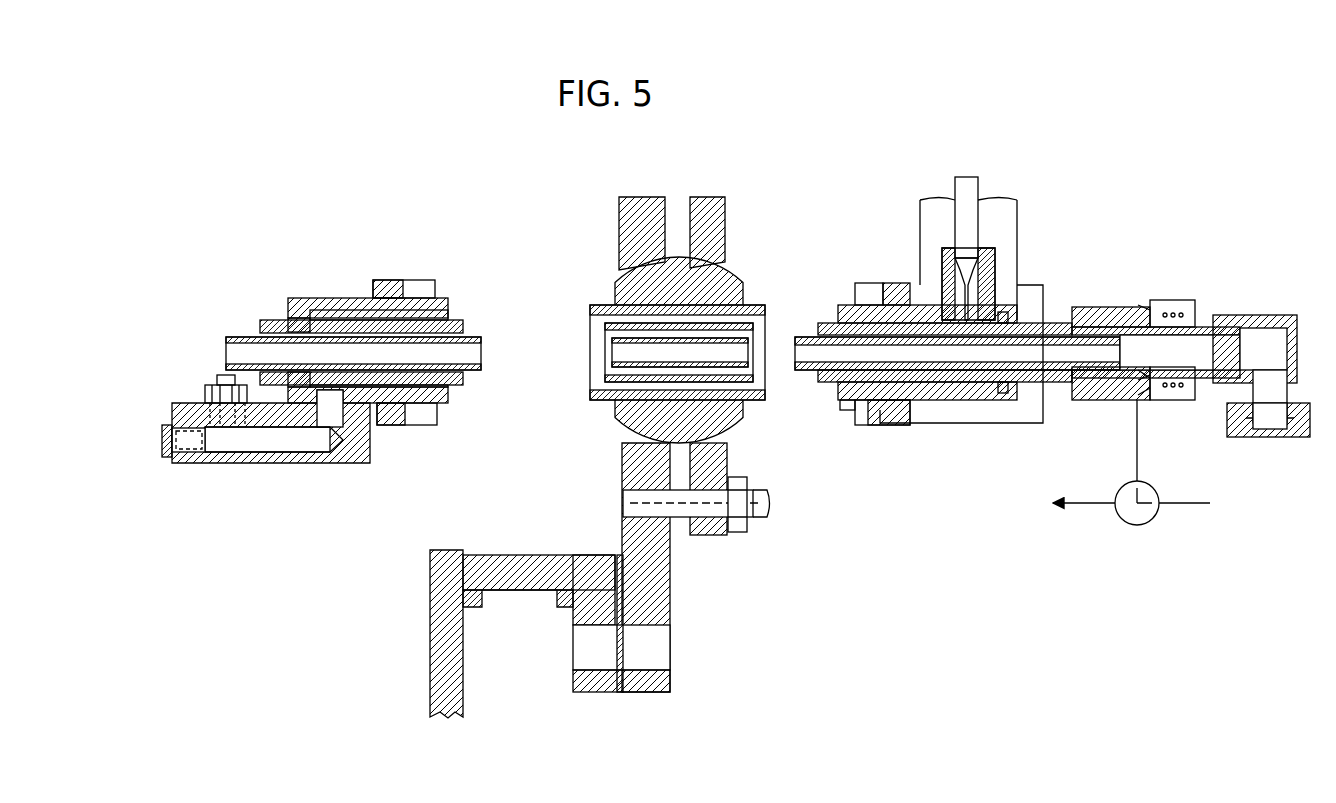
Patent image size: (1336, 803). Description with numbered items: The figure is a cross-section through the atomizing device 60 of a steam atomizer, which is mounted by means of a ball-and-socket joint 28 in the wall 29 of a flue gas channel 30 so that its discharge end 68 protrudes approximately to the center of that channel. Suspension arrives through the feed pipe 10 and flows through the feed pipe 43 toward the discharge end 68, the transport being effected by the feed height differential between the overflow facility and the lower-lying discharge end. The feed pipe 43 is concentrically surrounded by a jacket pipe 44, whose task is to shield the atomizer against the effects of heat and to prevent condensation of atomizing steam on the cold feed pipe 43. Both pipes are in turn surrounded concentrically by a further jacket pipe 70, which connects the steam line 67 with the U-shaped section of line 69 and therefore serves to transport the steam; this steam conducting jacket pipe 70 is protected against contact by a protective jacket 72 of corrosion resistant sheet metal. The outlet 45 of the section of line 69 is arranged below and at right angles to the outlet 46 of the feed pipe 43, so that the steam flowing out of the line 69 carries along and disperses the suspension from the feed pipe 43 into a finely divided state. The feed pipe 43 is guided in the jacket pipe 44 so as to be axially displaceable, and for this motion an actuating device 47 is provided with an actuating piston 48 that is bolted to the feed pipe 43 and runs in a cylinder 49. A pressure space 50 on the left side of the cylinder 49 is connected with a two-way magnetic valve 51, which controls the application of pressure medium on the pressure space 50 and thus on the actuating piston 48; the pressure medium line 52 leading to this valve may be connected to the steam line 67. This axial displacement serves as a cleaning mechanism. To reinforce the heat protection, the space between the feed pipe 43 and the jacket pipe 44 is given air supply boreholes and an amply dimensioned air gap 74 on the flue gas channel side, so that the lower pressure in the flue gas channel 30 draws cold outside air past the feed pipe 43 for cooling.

The feed pipe 10 is at (1250, 440).
The ball-and-socket joint 28 is at (725, 265).
The wall 29 is at (435, 620).
The flue gas channel 30 is at (346, 708).
The feed pipe 43 is at (796, 336).
The jacket pipe 44 is at (828, 322).
The outlet 45 is at (206, 384).
The outlet 46 is at (240, 336).
The actuating device 47 is at (1105, 195).
The actuating piston 48 is at (1152, 305).
The cylinder 49 is at (1180, 300).
The pressure space 50 is at (1150, 400).
The two-way magnetic valve 51 is at (1137, 525).
The pressure medium line 52 is at (1195, 505).
The atomizing device 60 is at (958, 600).
The steam line 67 is at (965, 185).
The discharge end 68 is at (382, 200).
The U-shaped section of line 69 is at (250, 464).
The jacket pipe 70 is at (842, 302).
The protective jacket 72 is at (412, 280).
The air gap 74 is at (256, 322).